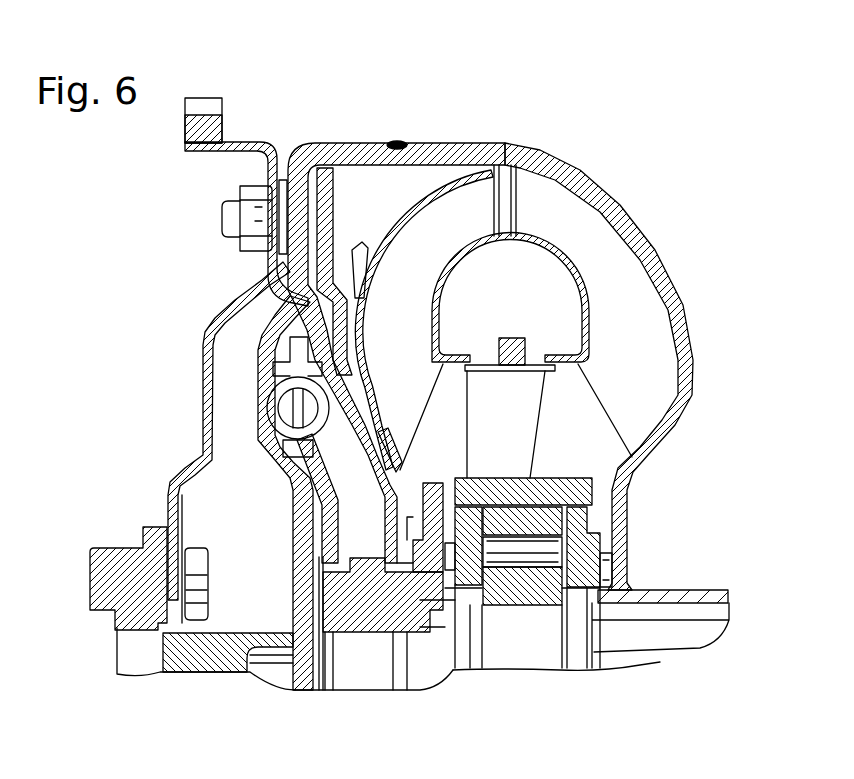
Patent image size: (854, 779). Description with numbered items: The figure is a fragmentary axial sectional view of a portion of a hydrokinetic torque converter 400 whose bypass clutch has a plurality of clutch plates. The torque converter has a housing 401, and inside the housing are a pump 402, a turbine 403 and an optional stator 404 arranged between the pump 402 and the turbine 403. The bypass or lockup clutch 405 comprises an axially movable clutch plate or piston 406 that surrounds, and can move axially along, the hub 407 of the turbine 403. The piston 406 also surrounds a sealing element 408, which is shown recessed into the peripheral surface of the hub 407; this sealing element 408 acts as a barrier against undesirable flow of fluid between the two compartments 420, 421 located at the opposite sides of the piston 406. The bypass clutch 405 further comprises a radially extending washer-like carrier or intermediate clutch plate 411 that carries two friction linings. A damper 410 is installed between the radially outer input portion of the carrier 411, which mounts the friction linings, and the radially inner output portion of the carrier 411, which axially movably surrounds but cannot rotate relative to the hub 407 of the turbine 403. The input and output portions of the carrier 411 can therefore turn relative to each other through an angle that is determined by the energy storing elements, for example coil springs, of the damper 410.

The hydrokinetic torque converter 400 is at (412, 88).
The housing 401 is at (589, 174).
The pump 402 is at (637, 283).
The turbine 403 is at (483, 190).
The stator 404 is at (530, 446).
The bypass clutch 405 is at (368, 137).
The clutch plate or piston 406 is at (374, 471).
The hub 407 is at (367, 620).
The sealing element 408 is at (347, 563).
The damper 410 is at (265, 402).
The carrier or intermediate clutch plate 411 is at (303, 299).
The compartment 420 is at (447, 160).
The compartment 421 is at (240, 328).